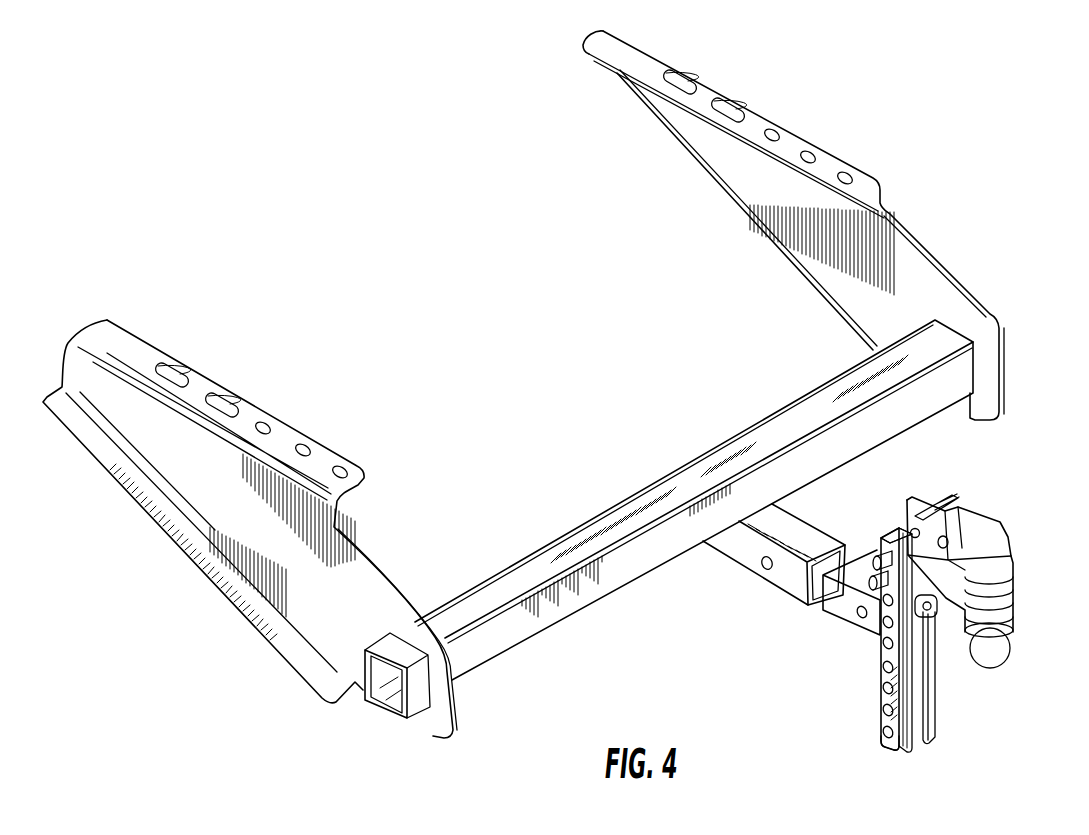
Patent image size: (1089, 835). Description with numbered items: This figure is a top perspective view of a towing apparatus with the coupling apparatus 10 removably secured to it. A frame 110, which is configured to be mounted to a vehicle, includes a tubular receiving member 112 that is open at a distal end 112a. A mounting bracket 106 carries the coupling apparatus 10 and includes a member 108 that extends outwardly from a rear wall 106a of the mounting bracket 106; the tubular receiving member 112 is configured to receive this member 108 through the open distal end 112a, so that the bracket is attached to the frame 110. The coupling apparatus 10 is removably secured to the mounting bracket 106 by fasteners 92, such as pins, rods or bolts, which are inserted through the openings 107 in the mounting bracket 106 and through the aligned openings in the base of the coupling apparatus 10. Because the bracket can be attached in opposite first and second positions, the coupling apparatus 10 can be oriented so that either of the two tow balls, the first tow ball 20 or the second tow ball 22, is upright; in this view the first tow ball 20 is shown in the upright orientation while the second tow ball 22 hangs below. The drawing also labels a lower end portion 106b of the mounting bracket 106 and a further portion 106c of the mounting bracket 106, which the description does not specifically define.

The coupling apparatus 10 is at (987, 568).
The first tow ball 20 is at (1020, 550).
The second tow ball 22 is at (995, 655).
The fasteners 92 is at (864, 584).
The mounting bracket 106 is at (912, 753).
The rear wall 106a is at (886, 530).
The lower end of mounting plate 106b is at (893, 742).
The rear bar of mounting plate 106c is at (936, 723).
The openings 107 is at (894, 711).
The member 108 is at (848, 614).
The frame 110 is at (934, 236).
The tubular receiving member 112 is at (733, 545).
The distal end 112a is at (800, 601).